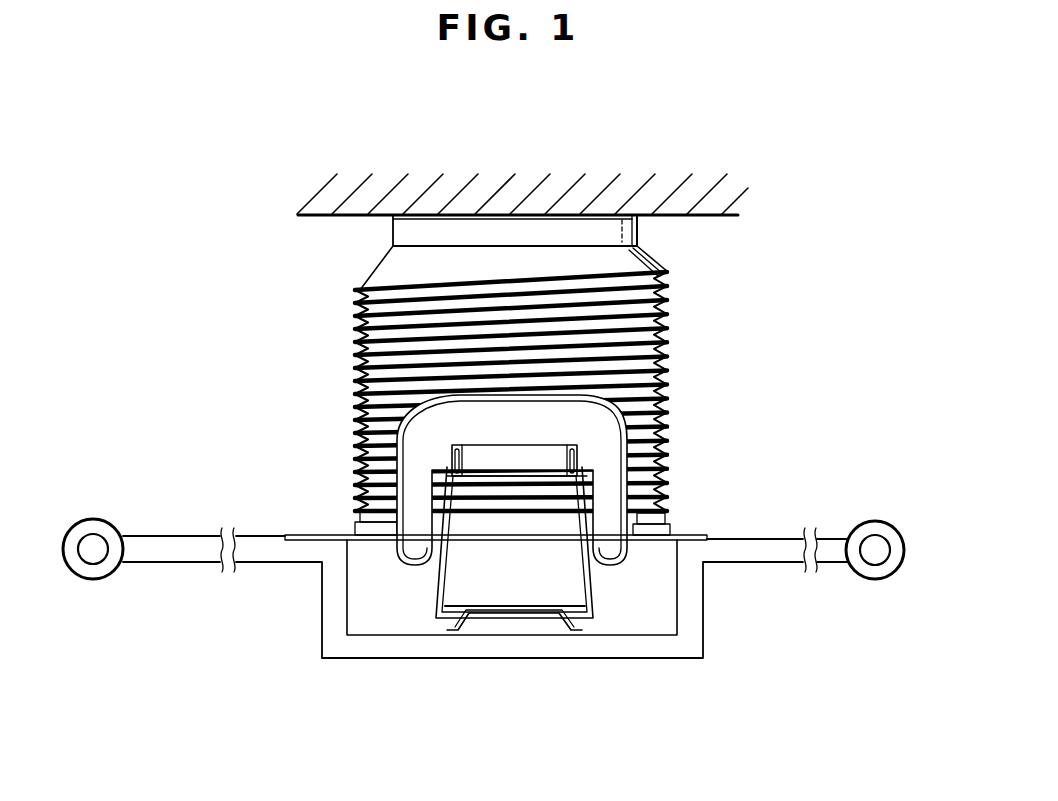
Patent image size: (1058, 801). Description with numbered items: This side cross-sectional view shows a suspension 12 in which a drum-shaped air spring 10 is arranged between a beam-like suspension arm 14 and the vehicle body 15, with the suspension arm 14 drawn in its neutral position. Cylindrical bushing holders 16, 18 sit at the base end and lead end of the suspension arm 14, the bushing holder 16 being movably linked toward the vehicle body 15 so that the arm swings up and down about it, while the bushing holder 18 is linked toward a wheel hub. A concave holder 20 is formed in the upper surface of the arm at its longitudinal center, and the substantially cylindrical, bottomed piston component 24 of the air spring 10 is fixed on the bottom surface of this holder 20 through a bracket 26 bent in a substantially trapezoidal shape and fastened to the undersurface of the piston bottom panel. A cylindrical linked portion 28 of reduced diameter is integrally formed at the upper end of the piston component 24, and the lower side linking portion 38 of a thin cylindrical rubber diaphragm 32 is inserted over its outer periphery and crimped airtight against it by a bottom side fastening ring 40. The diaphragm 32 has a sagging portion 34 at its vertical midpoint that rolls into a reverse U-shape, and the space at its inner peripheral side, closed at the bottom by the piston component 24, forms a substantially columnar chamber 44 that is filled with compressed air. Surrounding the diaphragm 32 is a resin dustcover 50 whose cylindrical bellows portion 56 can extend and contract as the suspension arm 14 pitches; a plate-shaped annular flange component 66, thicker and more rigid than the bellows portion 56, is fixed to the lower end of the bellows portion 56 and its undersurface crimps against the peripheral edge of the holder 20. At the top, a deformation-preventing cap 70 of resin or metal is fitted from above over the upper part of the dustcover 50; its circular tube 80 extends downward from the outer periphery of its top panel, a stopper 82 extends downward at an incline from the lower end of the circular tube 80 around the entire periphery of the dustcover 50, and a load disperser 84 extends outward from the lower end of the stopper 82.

The air spring 10 is at (282, 323).
The suspension 12 is at (832, 193).
The suspension arm 14 is at (286, 678).
The vehicle body 15 is at (738, 216).
The bushing holder 16 is at (82, 578).
The bushing holder 18 is at (893, 575).
The holder 20 is at (642, 627).
The piston component 24 is at (437, 598).
The bracket 26 is at (559, 627).
The linked portion 28 is at (462, 470).
The diaphragm 32 is at (405, 438).
The sagging portion 34 is at (400, 560).
The lower side linking portion 38 is at (578, 455).
The bottom side fastening ring 40 is at (450, 455).
The chamber 44 is at (552, 434).
The dustcover 50 is at (565, 403).
The bellows portion 56 is at (668, 375).
The flange component 66 is at (670, 530).
The deformation-preventing cap 70 is at (392, 244).
The circular tube 80 is at (640, 228).
The stopper 82 is at (375, 263).
The load disperser 84 is at (665, 272).